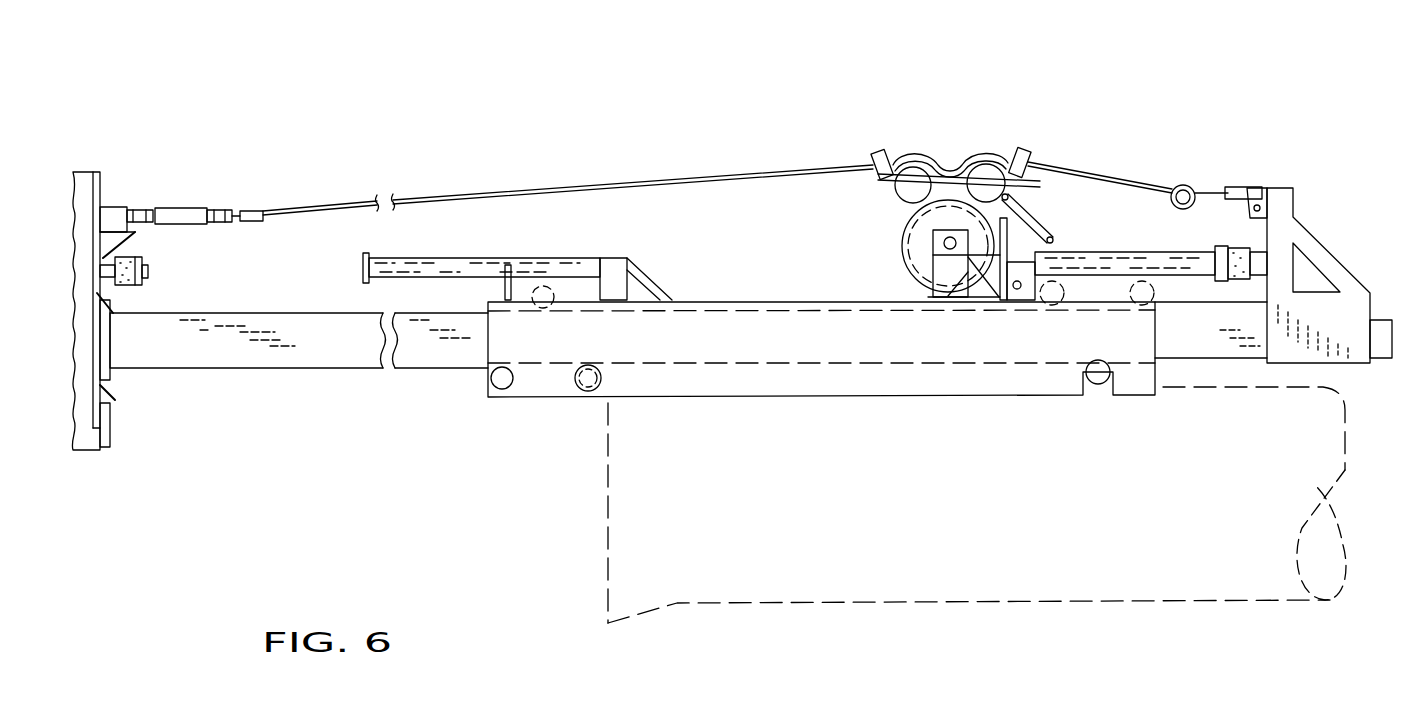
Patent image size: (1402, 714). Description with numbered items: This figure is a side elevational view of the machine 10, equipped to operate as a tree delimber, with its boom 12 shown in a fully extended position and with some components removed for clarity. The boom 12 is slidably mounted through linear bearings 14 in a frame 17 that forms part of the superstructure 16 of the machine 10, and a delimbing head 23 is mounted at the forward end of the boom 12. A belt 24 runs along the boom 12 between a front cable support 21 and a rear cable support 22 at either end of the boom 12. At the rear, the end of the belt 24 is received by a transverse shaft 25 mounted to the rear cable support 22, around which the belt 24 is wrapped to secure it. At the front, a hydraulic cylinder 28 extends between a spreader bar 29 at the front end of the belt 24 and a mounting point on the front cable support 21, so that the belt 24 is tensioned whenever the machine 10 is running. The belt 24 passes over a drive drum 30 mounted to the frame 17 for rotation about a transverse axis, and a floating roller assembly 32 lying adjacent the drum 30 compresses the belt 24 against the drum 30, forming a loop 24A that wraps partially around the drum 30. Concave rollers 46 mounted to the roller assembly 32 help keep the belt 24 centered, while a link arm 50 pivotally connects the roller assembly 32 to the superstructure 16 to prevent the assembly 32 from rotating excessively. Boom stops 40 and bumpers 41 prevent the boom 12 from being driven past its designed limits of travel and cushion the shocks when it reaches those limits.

The machine 10 is at (533, 110).
The boom 12 is at (270, 370).
The linear bearings 14 is at (492, 385).
The superstructure 16 is at (595, 478).
The frame 17 is at (748, 300).
The front cable support 21 is at (110, 195).
The rear cable support 22 is at (1298, 186).
The delimbing head 23 is at (110, 432).
The belt 24 is at (530, 190).
The loop 24A is at (906, 262).
The transverse shaft 25 is at (1190, 185).
The hydraulic cylinder 28 is at (182, 207).
The spreader bar 29 is at (252, 210).
The drive drum 30 is at (905, 220).
The floating roller assembly 32 is at (940, 165).
The boom stops 40 is at (443, 258).
The bumpers 41 is at (145, 270).
The concave rollers 46 is at (873, 160).
The link arm 50 is at (1035, 212).